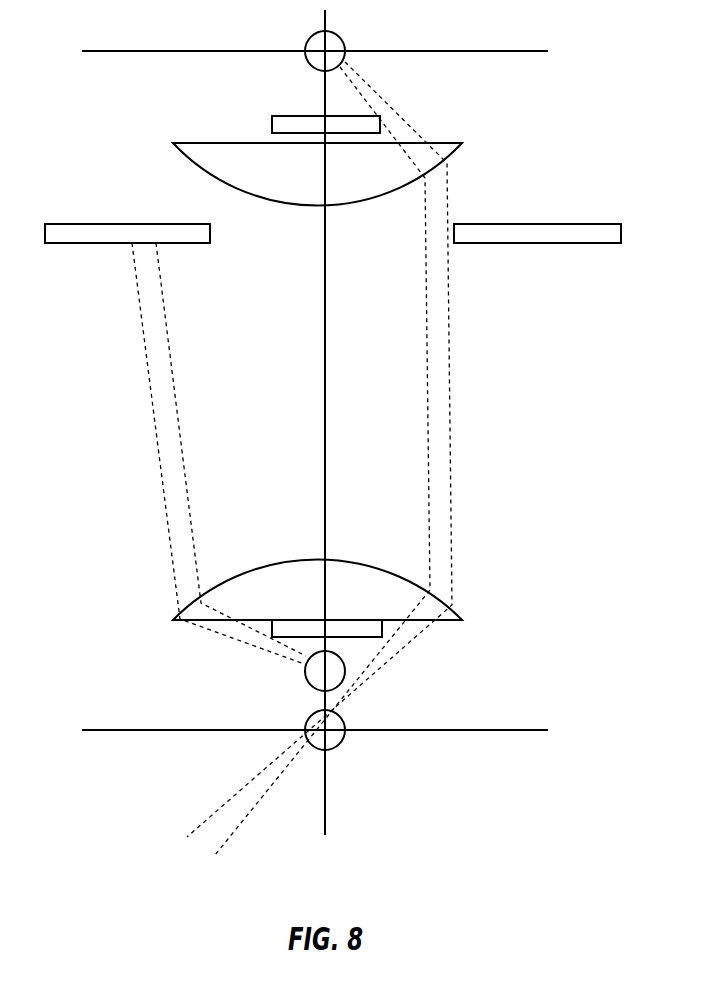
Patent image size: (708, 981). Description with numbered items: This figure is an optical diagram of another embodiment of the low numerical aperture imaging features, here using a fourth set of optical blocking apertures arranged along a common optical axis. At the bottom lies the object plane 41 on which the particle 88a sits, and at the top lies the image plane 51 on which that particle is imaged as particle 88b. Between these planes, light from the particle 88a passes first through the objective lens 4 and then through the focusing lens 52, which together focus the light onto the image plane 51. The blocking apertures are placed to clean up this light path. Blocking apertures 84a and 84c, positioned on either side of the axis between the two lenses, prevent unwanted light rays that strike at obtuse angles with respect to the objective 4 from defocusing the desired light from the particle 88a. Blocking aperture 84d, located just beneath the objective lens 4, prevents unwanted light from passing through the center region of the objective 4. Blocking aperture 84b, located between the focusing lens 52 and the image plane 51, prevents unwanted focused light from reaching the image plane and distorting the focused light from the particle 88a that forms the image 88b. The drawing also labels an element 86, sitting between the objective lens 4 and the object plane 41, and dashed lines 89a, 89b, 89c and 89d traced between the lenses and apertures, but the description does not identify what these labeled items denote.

The objective lens 4 is at (377, 567).
The object plane 41 is at (480, 730).
The image plane 51 is at (492, 51).
The focusing lens 52 is at (457, 143).
The blocking aperture 84a is at (118, 224).
The blocking aperture 84b is at (285, 116).
The blocking aperture 84c is at (570, 224).
The blocking aperture 84d is at (382, 628).
The optical fiber end 86 is at (307, 683).
The particle 88a is at (340, 747).
The imaged particle 88b is at (339, 34).
The light ray 89a is at (140, 368).
The light ray 89b is at (185, 443).
The light ray 89c is at (427, 363).
The light ray 89d is at (452, 418).